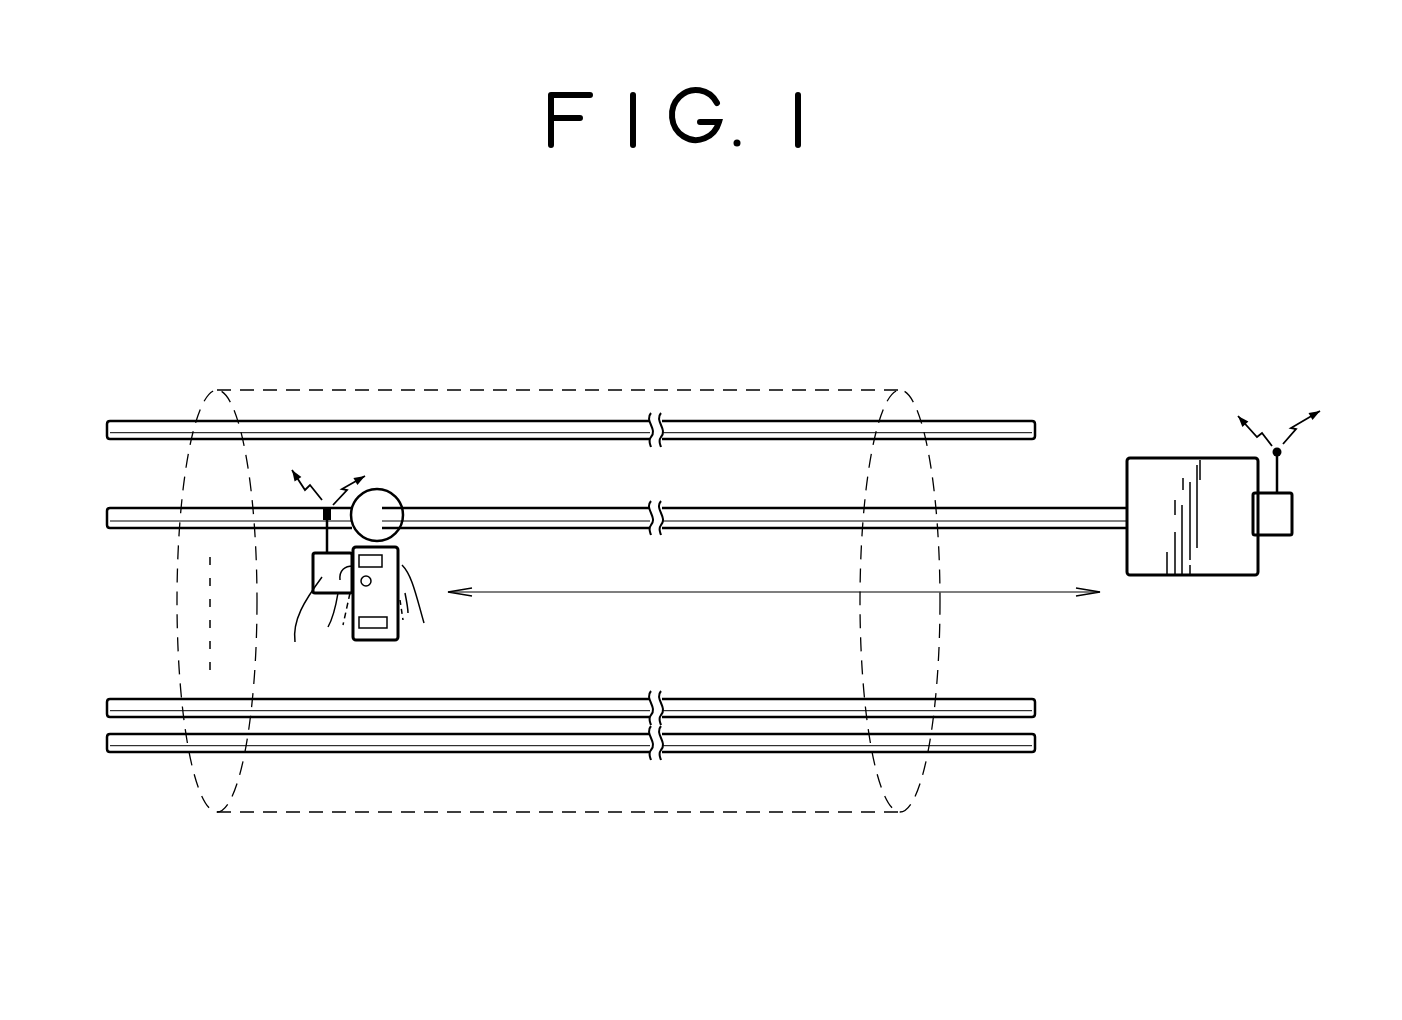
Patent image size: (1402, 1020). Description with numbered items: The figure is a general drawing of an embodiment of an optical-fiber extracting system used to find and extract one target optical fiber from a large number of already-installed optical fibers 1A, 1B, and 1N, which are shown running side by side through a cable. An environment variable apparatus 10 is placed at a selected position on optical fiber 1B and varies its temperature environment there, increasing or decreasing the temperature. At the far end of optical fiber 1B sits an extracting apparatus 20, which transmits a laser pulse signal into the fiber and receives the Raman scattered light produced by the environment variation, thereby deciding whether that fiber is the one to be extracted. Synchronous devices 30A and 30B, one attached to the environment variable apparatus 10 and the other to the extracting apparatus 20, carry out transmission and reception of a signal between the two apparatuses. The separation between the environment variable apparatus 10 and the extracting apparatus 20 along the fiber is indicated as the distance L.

The optical fiber 1A is at (787, 420).
The optical fiber 1B is at (513, 510).
The optical fiber 1N is at (768, 748).
The environment variable apparatus 10 is at (383, 633).
The extracting apparatus 20 is at (1210, 555).
The synchronous device 30A is at (320, 577).
The synchronous device 30B is at (1275, 527).
The distance between transmitter and receiver L is at (774, 610).